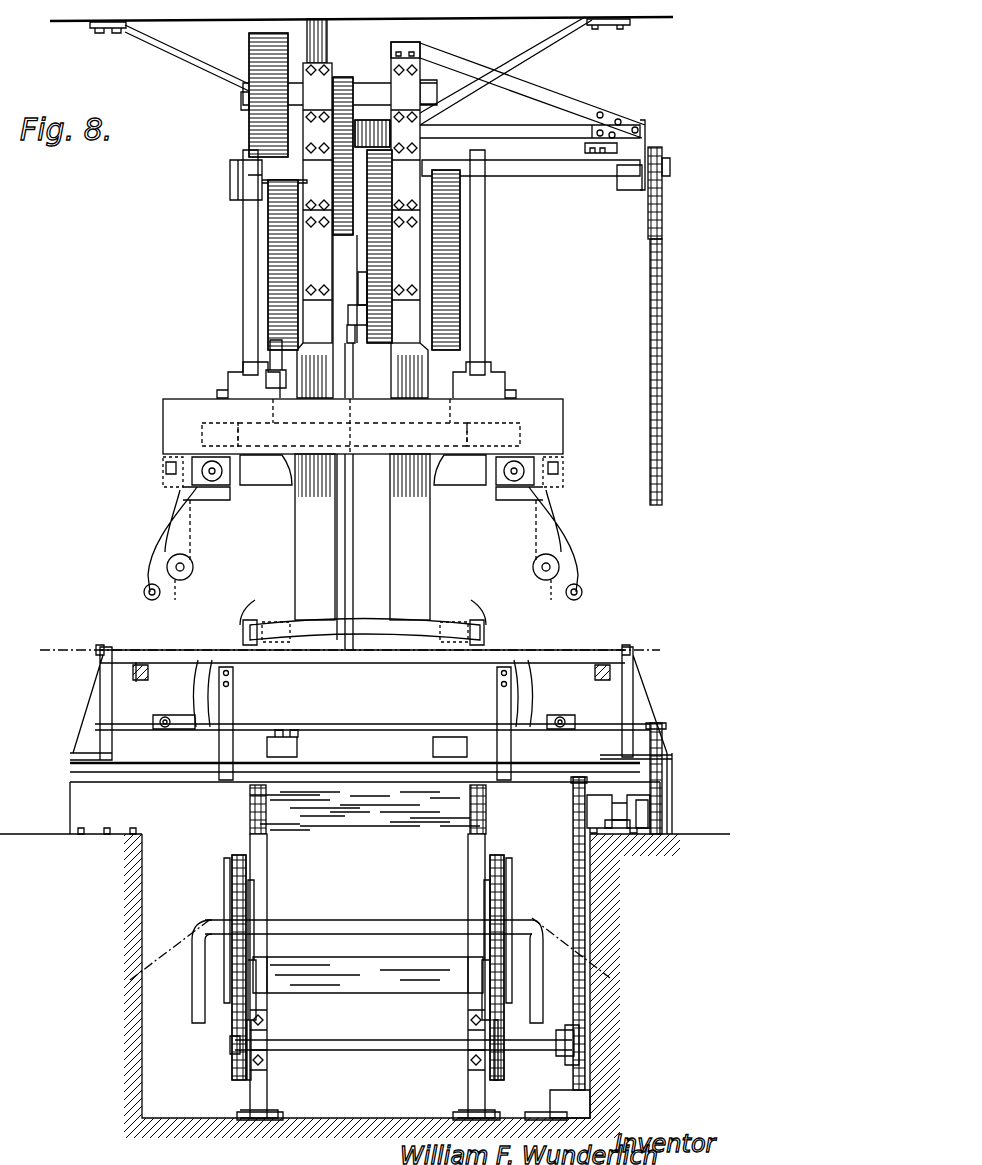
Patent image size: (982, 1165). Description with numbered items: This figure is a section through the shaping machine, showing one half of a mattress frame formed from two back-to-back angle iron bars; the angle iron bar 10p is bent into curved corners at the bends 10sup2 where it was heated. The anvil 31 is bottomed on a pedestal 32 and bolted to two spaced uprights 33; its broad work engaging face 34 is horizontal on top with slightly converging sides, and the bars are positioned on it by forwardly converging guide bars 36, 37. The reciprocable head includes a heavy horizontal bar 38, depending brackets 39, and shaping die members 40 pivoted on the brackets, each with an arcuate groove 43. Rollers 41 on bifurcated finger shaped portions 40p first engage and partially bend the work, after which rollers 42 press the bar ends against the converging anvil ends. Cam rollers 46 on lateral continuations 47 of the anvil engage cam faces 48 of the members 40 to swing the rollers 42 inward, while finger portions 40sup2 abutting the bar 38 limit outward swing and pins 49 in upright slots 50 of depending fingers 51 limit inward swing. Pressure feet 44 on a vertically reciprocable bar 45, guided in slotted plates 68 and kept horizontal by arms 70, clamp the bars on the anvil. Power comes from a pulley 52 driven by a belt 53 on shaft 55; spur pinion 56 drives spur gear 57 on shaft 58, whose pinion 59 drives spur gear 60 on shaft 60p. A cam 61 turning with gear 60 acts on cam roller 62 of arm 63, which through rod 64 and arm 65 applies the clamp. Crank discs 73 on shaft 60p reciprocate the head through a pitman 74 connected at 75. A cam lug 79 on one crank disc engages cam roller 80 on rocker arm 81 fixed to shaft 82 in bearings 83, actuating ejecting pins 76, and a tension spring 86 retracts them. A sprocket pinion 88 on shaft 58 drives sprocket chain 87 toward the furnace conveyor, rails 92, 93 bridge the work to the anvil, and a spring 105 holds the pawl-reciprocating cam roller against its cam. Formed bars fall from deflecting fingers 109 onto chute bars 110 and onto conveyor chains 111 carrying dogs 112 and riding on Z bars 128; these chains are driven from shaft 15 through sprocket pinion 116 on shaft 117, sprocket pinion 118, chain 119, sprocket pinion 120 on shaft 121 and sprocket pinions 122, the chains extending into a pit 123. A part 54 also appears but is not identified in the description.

The shaft 15 is at (662, 780).
The anvil 31 is at (395, 724).
The pedestal 32 is at (80, 785).
The uprights 33 is at (320, 532).
The work engaging face 34 is at (395, 722).
The guide bar 36 is at (633, 640).
The guide bar 37 is at (105, 650).
The heavy horizontal bar 38 is at (555, 398).
The brackets 39 is at (205, 460).
The shaping die members 40 is at (175, 503).
The bifurcated finger shaped portions 40p is at (160, 552).
The finger portions 40sup2 is at (160, 487).
The work engaging rollers 41 is at (142, 585).
The work engaging rollers 42 is at (165, 567).
The arcuate groove 43 is at (215, 505).
The pressure feet 44 is at (366, 607).
The horizontal bar 45 is at (352, 625).
The cam rollers 46 is at (168, 716).
The lateral continuations 47 is at (180, 730).
The cam faces 48 is at (363, 598).
The pins 49 is at (160, 470).
The upright slots 50 is at (160, 457).
The fingers 51 is at (165, 455).
The pulley 52 is at (249, 57).
The belt 53 is at (267, 55).
The shaft housing 54 is at (322, 50).
The horizontal shaft 55 is at (404, 90).
The spur pinion 56 is at (343, 80).
The spur gear 57 is at (400, 215).
The shaft 58 is at (585, 172).
The spur pinion 59 is at (372, 150).
The spur gear 60 is at (353, 345).
The shaft 60p is at (330, 248).
The cam 61 is at (360, 284).
The cam roller 62 is at (350, 397).
The intermediately pivoted arm 63 is at (347, 322).
The rod 64 is at (520, 530).
The intermediately pivoted arm 65 is at (335, 622).
The plates 68 is at (280, 618).
The horizontal arms 70 is at (272, 665).
The crank discs 73 is at (280, 260).
The pitman 74 is at (250, 298).
The connection 75 is at (228, 367).
The pins 76 is at (205, 660).
The cam lug 79 is at (250, 170).
The cam roller 80 is at (300, 215).
The rocker arm 81 is at (265, 255).
The horizontal shaft 82 is at (405, 430).
The bearings 83 is at (361, 422).
The tension spring 86 is at (268, 355).
The sprocket chain 87 is at (665, 305).
The sprocket pinion 88 is at (656, 150).
The rail 92 is at (603, 680).
The rail 93 is at (140, 680).
The spring 105 is at (270, 745).
The deflecting fingers 109 is at (500, 720).
The guide bars 110 is at (268, 850).
The conveyor sprocket chains 111 is at (500, 872).
The dogs 112 is at (255, 890).
The sprocket pinion 116 is at (655, 834).
The shaft 117 is at (620, 812).
The sprocket pinion 118 is at (580, 790).
The sprocket chain 119 is at (588, 925).
The sprocket pinion 120 is at (590, 1095).
The shaft 121 is at (392, 1045).
The sprocket pinions 122 is at (245, 1085).
The pit 123 is at (175, 870).
The Z bars 128 is at (225, 855).
The angle iron bar 10p is at (575, 650).
The bends 10sup2 is at (210, 920).